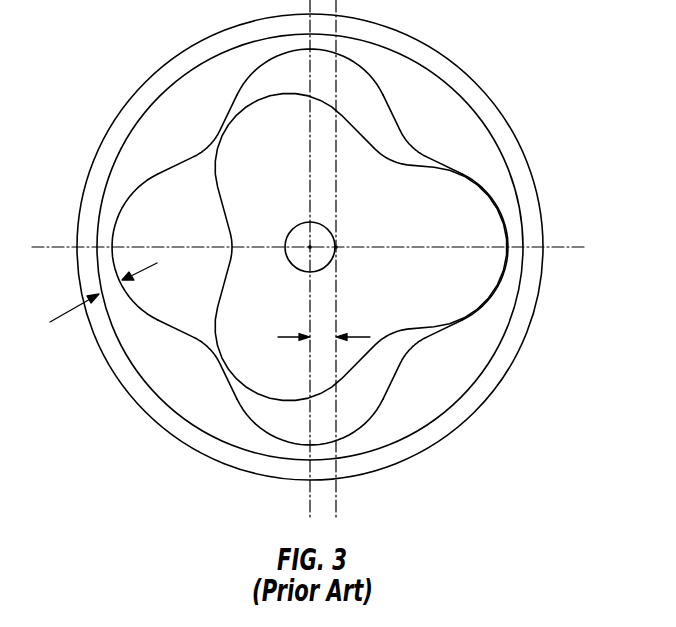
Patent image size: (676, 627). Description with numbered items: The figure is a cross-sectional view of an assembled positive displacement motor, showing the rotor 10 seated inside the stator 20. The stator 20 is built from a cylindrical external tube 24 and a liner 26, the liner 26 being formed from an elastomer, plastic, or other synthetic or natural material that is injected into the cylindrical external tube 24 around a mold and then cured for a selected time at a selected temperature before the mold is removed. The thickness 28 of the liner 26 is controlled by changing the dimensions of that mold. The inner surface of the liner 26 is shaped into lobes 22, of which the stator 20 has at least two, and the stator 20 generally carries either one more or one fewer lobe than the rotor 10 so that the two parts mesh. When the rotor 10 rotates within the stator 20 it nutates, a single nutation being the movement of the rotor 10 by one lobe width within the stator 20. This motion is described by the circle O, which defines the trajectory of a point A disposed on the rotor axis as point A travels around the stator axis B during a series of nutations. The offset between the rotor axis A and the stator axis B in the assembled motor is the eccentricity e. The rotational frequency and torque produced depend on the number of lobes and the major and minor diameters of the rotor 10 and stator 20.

The rotor 10 is at (432, 303).
The stator 20 is at (328, 247).
The lobes 22 is at (162, 252).
The cylindrical external tube 24 is at (310, 247).
The liner 26 is at (331, 247).
The thickness 28 is at (88, 303).
The circle O is at (277, 217).
The point on rotor axis A is at (364, 224).
The stator axis B is at (296, 259).
The eccentricity e is at (314, 334).